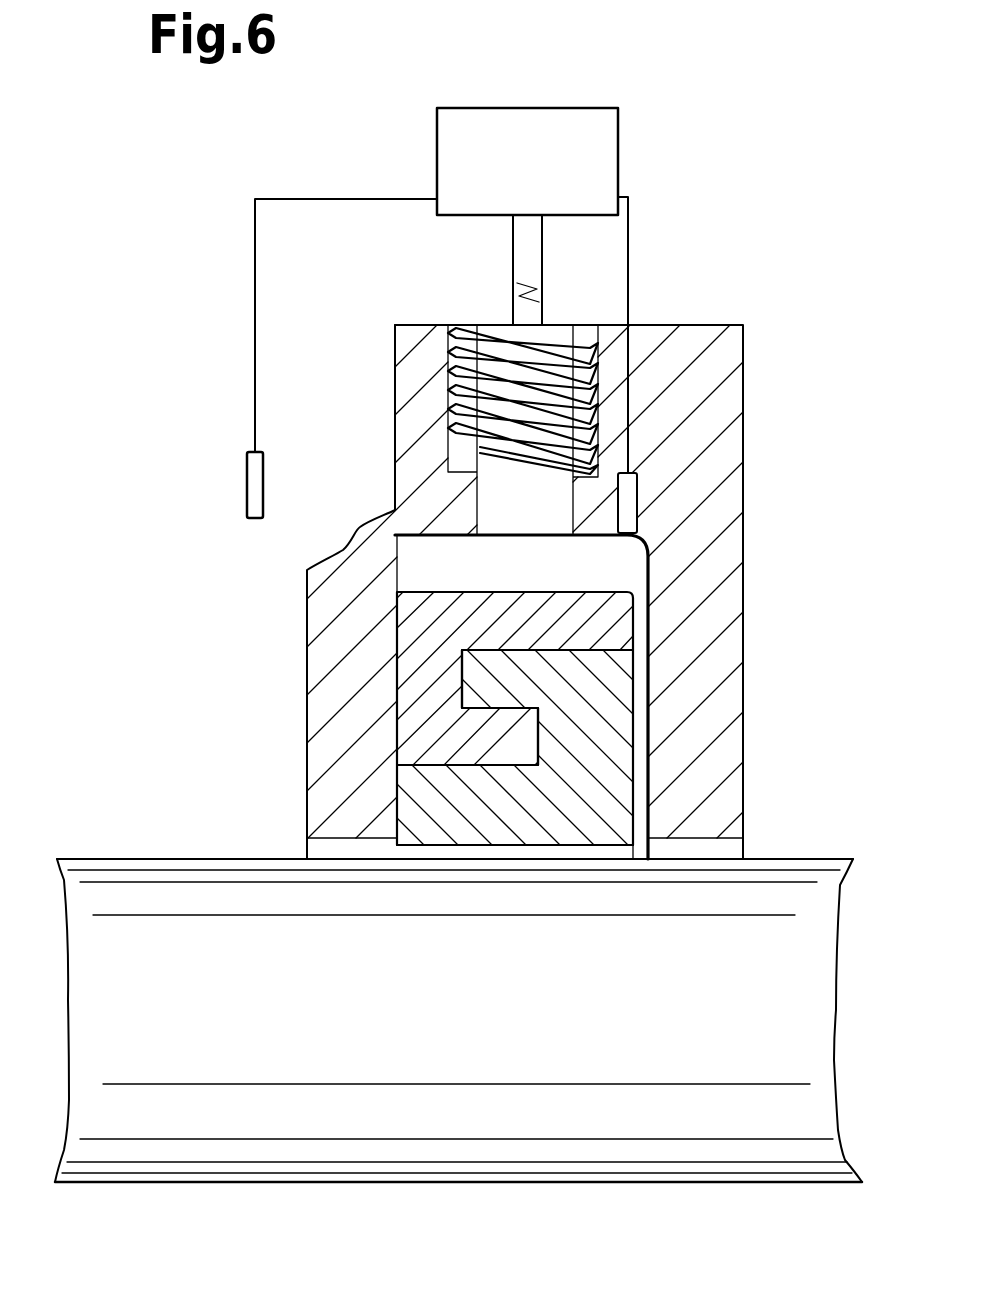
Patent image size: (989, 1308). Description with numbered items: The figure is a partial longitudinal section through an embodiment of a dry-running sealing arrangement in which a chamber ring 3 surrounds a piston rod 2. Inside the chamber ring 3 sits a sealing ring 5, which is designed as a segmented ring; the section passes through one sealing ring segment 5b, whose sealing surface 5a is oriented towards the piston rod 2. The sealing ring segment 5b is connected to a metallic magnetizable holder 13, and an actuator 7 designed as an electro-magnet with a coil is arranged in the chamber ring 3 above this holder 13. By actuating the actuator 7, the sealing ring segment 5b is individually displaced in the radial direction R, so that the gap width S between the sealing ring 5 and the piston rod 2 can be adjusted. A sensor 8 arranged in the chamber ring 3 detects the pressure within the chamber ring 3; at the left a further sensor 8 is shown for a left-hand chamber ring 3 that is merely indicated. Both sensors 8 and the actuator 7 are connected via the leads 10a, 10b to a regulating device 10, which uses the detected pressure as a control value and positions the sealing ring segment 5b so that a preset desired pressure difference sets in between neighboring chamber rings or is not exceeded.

The piston rod 2 is at (513, 1157).
The chamber ring 3 is at (723, 473).
The sealing ring 5 is at (622, 708).
The sealing surface 5a is at (462, 851).
The sealing ring segment 5b is at (612, 828).
The actuator 7 is at (517, 402).
The sensor 8 is at (252, 490).
The regulating device 10 is at (602, 143).
The lead 10a is at (330, 199).
The lead 10b is at (513, 252).
The metallic magnetizable holder 13 is at (427, 638).
The gap width S is at (603, 847).
The radial direction R is at (527, 875).